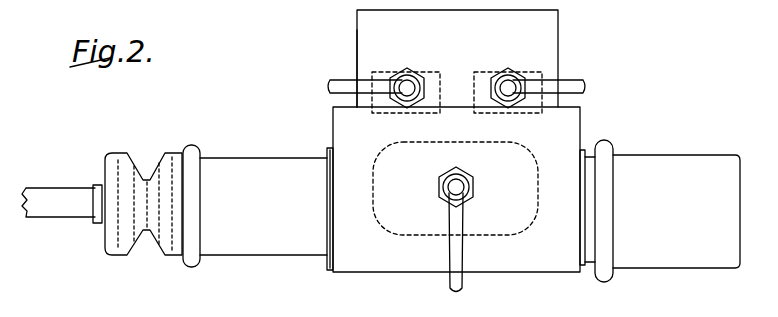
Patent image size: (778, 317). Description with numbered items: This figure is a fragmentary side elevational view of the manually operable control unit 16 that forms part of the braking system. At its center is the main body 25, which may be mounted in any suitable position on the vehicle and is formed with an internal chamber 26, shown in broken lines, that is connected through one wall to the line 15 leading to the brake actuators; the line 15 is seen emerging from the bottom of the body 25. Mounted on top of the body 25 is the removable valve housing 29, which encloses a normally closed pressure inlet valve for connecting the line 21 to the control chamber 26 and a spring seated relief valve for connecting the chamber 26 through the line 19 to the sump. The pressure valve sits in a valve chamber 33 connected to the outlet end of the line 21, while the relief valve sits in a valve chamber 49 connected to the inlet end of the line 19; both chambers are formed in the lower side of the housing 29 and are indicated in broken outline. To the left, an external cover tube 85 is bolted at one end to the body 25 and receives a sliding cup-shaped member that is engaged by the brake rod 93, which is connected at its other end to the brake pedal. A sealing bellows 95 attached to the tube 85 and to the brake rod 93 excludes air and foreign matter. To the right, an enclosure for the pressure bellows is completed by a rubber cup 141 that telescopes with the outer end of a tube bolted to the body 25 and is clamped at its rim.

The control unit 16 is at (347, 46).
The line 19 is at (340, 82).
The line 21 is at (567, 80).
The main body 25 is at (535, 265).
The internal chamber 26 is at (395, 234).
The valve housing 29 is at (548, 28).
The valve chamber 33 is at (484, 72).
The valve chamber 49 is at (372, 72).
The line 15 is at (463, 280).
The cover tube 85 is at (260, 168).
The brake rod 93 is at (68, 197).
The sealing bellows 95 is at (135, 175).
The rubber cup 141 is at (702, 163).